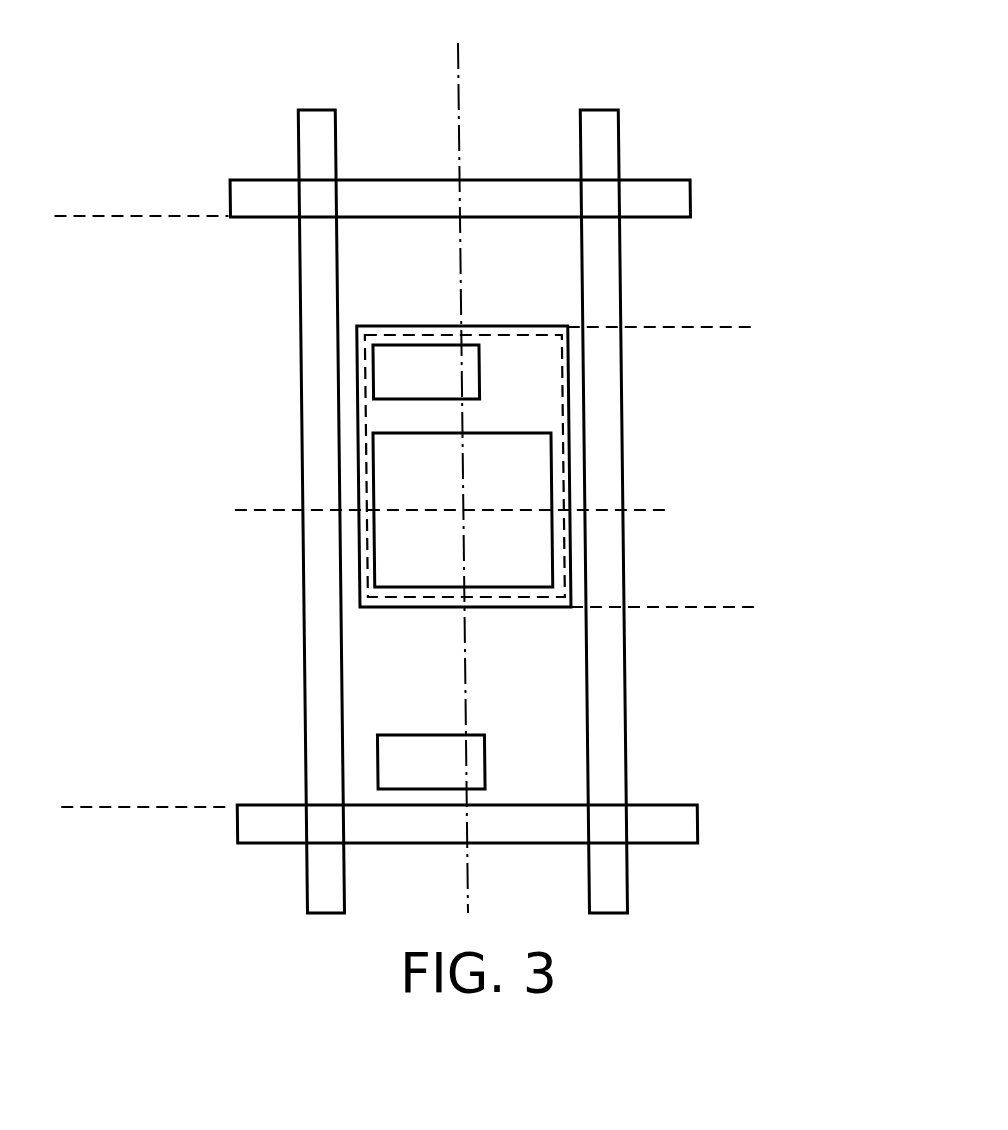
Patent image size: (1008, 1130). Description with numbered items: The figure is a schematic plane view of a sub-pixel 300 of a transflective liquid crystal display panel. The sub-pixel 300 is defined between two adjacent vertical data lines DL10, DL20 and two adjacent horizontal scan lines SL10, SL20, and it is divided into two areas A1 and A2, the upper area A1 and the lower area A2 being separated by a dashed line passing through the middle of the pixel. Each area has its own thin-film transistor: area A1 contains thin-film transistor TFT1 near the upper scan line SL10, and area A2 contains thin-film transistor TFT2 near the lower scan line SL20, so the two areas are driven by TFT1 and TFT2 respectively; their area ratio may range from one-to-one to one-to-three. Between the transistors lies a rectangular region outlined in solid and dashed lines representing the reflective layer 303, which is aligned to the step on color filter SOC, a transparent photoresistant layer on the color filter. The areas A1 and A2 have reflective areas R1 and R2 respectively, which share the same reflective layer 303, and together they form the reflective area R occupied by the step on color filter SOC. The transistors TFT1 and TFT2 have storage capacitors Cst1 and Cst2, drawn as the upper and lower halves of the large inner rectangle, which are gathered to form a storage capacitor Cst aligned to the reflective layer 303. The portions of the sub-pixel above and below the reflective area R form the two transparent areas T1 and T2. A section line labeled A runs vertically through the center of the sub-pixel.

The sub-pixel 300 is at (405, 252).
The reflective layer 303 is at (357, 416).
The step on color filter SOC is at (364, 372).
The thin-film transistor TFT1 is at (373, 358).
The thin-film transistor TFT2 is at (386, 757).
The storage capacitor Cst is at (205, 462).
The storage capacitor Cst1 is at (381, 472).
The storage capacitor Cst2 is at (381, 549).
The data line DL10 is at (317, 99).
The data line DL20 is at (598, 99).
The scan line SL10 is at (703, 199).
The scan line SL20 is at (712, 823).
The area A1 is at (100, 218).
The area A2 is at (103, 517).
The transparent area T1 is at (664, 219).
The transparent area T2 is at (670, 609).
The reflective area R1 is at (664, 330).
The reflective area R2 is at (664, 512).
The reflective area R is at (759, 330).
The section line A-A' A is at (467, 477).